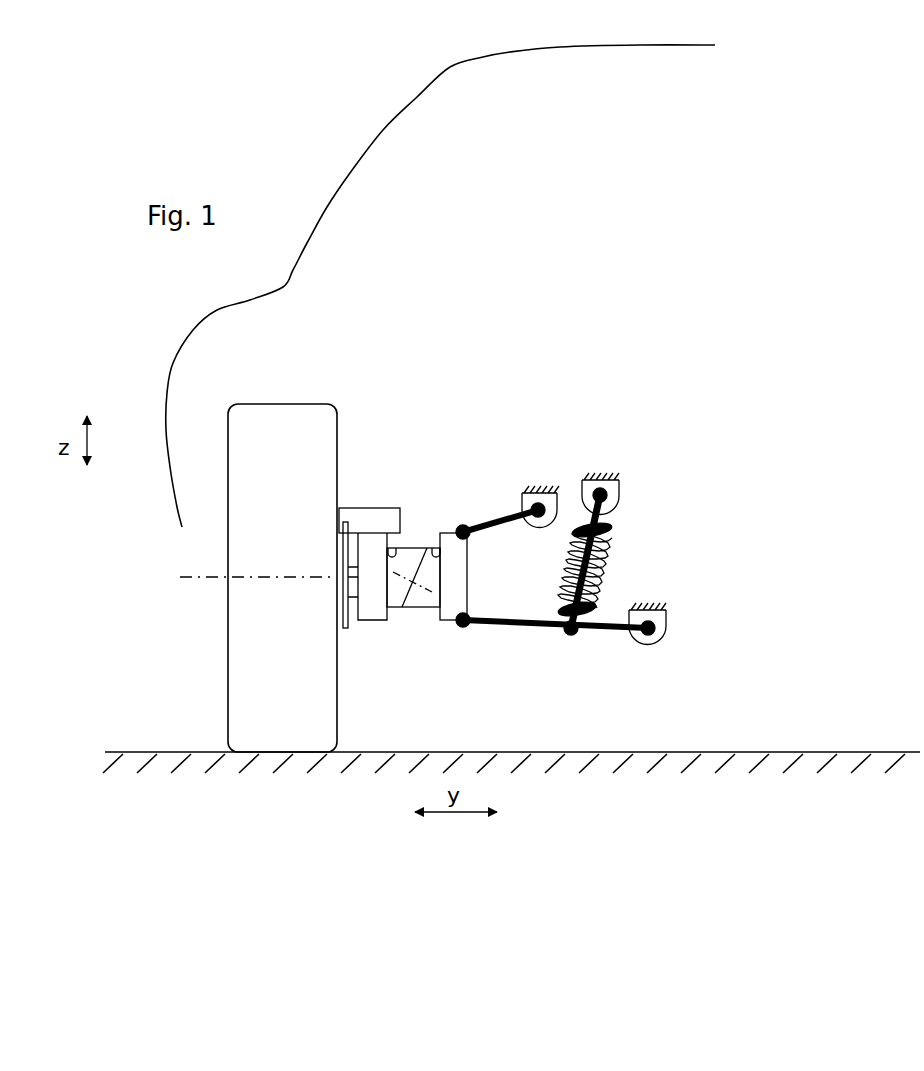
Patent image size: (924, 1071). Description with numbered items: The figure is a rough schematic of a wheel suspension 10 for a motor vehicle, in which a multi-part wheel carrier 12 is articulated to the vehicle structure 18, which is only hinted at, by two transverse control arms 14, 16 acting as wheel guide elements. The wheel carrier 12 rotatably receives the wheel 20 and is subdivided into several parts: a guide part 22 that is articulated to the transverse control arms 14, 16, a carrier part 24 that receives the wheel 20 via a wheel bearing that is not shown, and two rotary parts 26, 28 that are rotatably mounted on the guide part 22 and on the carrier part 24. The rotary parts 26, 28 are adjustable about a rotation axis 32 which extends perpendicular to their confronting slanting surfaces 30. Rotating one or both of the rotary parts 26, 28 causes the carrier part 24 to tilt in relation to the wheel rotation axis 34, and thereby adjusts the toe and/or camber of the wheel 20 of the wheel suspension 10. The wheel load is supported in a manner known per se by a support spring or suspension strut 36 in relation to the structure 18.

The wheel suspension 10 is at (420, 424).
The wheel carrier 12 is at (412, 538).
The transverse control arm 14 is at (490, 517).
The transverse control arm 16 is at (535, 630).
The structure 18 is at (526, 492).
The wheel 20 is at (295, 402).
The guide part 22 is at (457, 575).
The carrier part 24 is at (375, 610).
The rotary part 26 is at (442, 530).
The rotary part 28 is at (393, 558).
The slanting surfaces 30 is at (413, 590).
The rotation axis 32 is at (397, 573).
The wheel rotation axis 34 is at (245, 578).
The suspension strut 36 is at (620, 553).